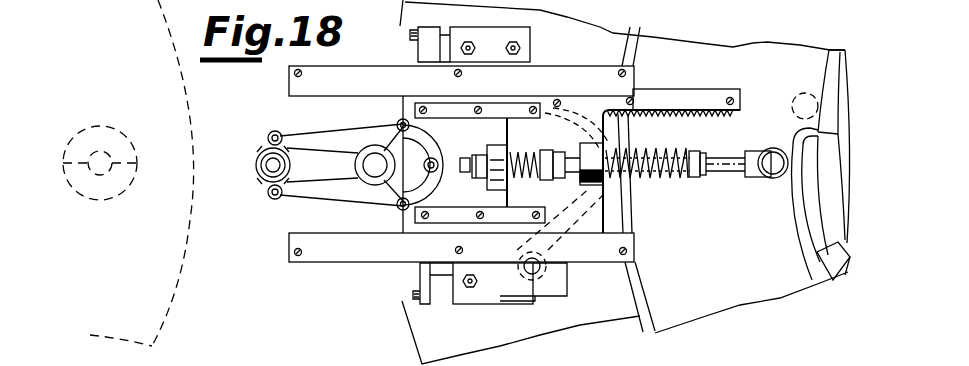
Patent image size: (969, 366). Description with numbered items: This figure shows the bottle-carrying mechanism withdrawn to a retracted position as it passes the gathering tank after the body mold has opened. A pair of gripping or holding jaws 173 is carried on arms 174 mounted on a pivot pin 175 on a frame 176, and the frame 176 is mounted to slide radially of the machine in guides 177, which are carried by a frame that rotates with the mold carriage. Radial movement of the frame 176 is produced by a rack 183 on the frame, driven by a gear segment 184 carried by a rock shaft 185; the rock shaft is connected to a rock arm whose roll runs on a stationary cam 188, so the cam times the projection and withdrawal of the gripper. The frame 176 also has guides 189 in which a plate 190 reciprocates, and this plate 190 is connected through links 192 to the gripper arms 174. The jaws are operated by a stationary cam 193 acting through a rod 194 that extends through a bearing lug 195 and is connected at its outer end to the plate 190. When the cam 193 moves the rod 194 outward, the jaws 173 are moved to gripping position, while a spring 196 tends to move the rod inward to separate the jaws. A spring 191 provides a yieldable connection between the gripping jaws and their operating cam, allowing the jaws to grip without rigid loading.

The gripping jaws 173 is at (257, 160).
The arms 174 is at (320, 200).
The pivot pin 175 is at (369, 153).
The frame 176 is at (402, 227).
The guides 177 is at (343, 263).
The rack 183 is at (683, 112).
The gear segment 184 is at (607, 143).
The rock shaft 185 is at (540, 283).
The stationary cam 188 is at (642, 326).
The guides 189 is at (458, 202).
The plate 190 is at (500, 190).
The spring 191 is at (514, 120).
The links 192 is at (432, 137).
The stationary cam 193 is at (797, 216).
The rod 194 is at (653, 170).
The bearing lug 195 is at (600, 186).
The spring 196 is at (673, 150).